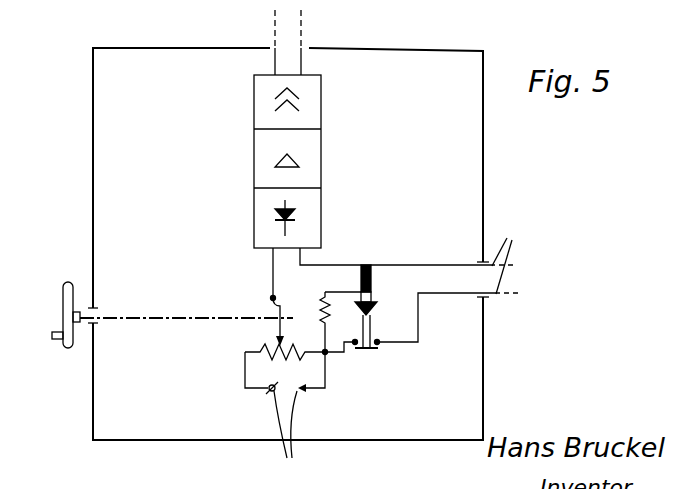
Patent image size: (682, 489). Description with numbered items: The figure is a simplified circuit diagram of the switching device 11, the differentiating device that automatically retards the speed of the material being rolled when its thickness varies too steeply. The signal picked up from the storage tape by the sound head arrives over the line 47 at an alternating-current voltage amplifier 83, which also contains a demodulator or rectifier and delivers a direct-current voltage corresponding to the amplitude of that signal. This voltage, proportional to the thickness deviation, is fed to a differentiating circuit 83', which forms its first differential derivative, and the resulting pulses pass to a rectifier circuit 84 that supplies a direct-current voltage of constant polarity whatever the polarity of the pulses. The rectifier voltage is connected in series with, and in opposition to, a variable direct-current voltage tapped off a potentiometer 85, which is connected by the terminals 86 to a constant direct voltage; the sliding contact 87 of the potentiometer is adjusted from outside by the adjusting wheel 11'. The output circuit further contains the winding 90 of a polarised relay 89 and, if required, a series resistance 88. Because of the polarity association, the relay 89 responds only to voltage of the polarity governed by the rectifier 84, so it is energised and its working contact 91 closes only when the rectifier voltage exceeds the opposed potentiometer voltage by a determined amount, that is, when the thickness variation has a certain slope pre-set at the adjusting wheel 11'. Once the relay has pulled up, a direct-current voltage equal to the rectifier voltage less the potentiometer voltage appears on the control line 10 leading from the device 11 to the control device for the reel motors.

The control line 10 is at (509, 256).
The switching device 11 is at (263, 244).
The adjusting wheel 11' is at (64, 331).
The line 47 is at (275, 41).
The alternating-current voltage amplifier 83 is at (258, 103).
The differentiating circuit 83' is at (256, 158).
The rectifier circuit 84 is at (278, 218).
The potentiometer 85 is at (268, 360).
The terminals 86 is at (287, 439).
The sliding contact 87 is at (278, 342).
The series resistance 88 is at (320, 308).
The polarised relay 89 is at (378, 299).
The winding 90 is at (364, 265).
The working contact 91 is at (374, 340).